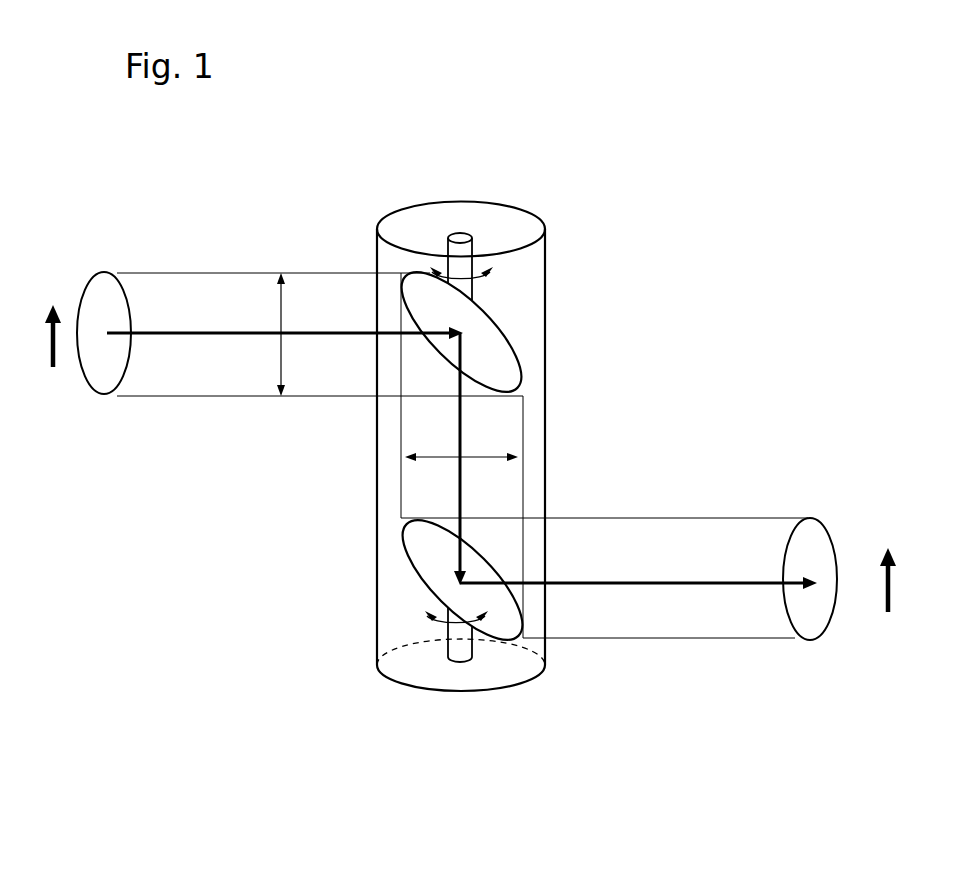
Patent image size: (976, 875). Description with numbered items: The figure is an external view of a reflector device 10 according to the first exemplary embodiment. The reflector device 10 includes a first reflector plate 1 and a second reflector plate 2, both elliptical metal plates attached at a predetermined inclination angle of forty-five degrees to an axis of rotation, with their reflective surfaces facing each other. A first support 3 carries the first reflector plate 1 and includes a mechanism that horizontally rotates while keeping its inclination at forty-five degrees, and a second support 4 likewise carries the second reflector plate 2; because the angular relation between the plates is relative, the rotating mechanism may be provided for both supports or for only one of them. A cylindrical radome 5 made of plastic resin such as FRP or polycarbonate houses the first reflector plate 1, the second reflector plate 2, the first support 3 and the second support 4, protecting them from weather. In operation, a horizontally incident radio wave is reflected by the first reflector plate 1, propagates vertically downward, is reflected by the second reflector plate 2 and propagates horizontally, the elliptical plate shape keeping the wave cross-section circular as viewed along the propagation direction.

The first reflector plate 1 is at (493, 357).
The second reflector plate 2 is at (422, 550).
The first support 3 is at (466, 251).
The second support 4 is at (455, 648).
The radome 5 is at (377, 437).
The reflector device 10 is at (564, 769).